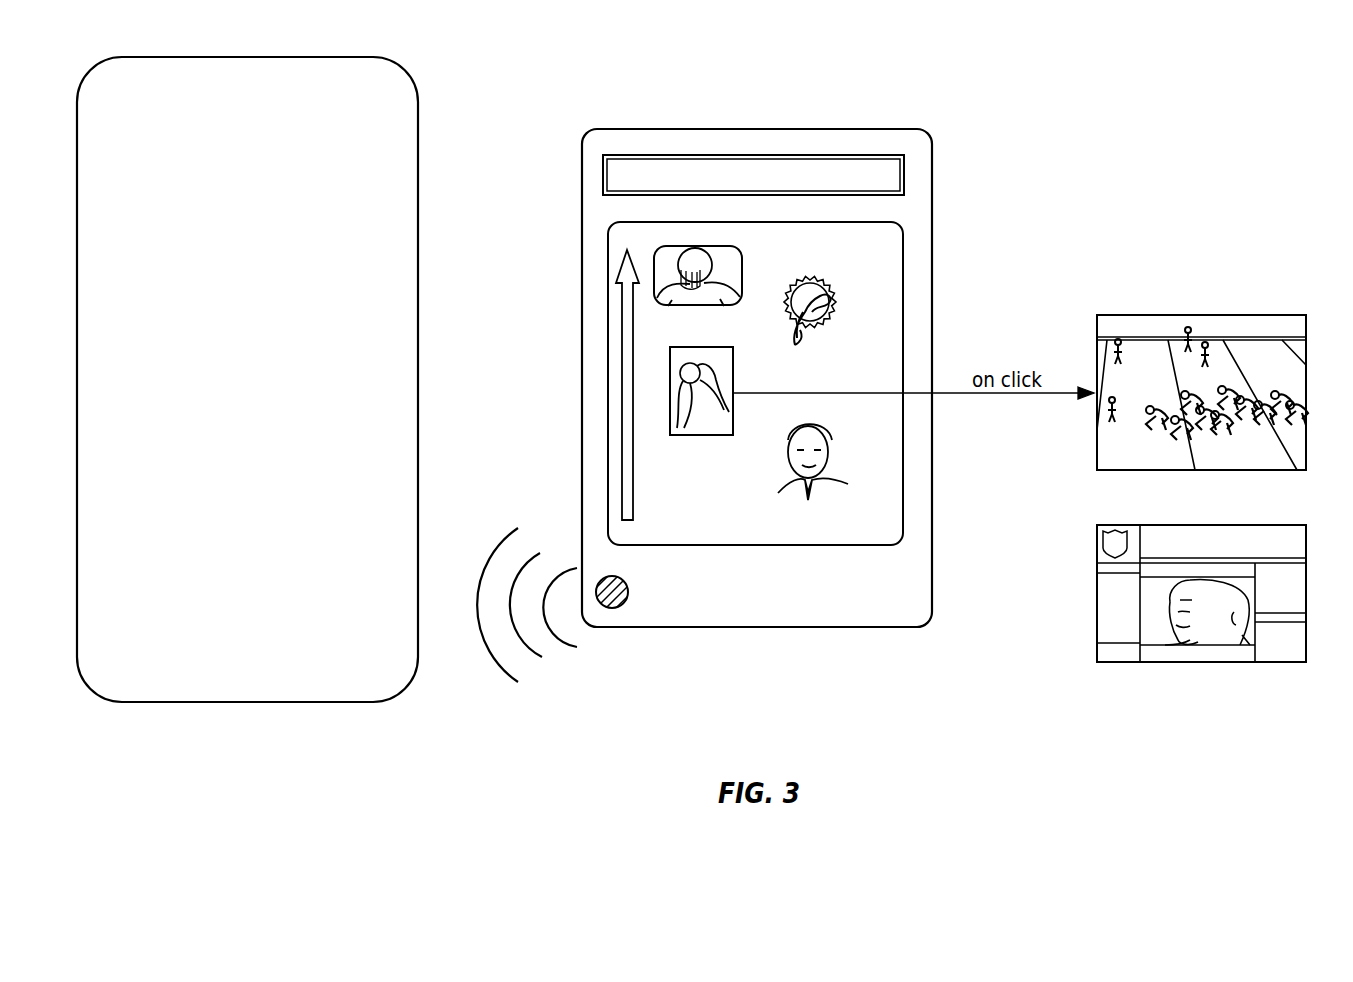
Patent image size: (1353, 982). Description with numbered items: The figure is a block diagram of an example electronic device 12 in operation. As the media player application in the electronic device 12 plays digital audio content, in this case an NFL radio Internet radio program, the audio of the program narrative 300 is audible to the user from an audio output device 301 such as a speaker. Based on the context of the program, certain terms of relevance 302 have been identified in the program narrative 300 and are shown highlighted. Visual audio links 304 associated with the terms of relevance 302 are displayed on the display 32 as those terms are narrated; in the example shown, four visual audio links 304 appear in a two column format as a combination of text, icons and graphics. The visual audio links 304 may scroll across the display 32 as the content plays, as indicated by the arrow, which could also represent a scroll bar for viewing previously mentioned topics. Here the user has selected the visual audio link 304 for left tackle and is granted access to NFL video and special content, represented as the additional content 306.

The electronic device 12 is at (790, 129).
The display 32 is at (902, 540).
The program narrative 300 is at (247, 407).
The audio output device 301 is at (623, 602).
The terms of relevance 302 is at (363, 350).
The visual audio links 304 is at (842, 303).
The additional content 306 is at (1143, 315).